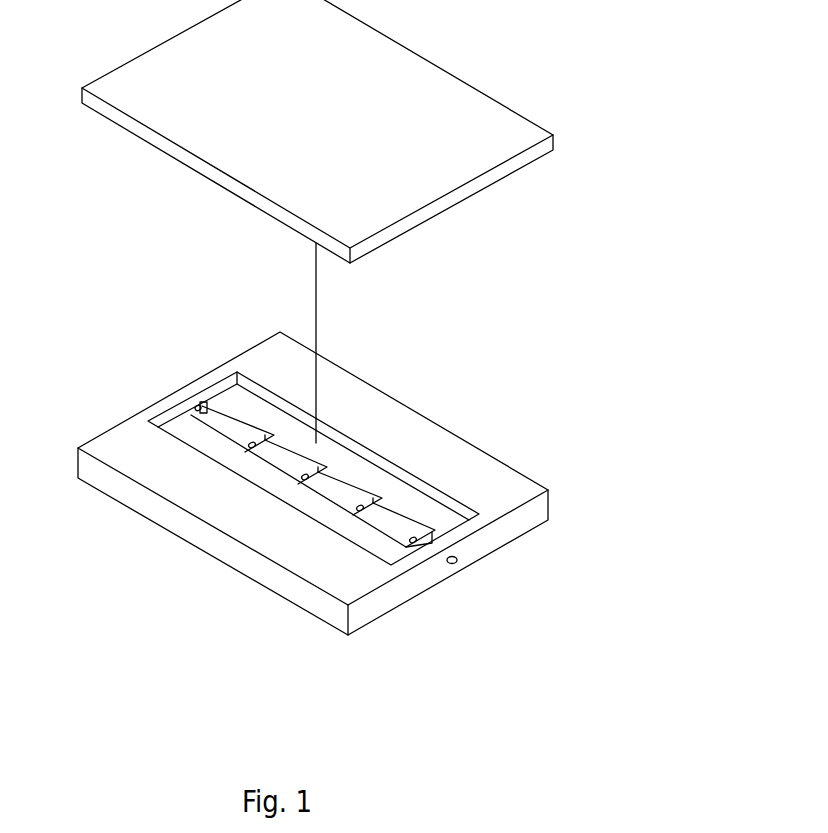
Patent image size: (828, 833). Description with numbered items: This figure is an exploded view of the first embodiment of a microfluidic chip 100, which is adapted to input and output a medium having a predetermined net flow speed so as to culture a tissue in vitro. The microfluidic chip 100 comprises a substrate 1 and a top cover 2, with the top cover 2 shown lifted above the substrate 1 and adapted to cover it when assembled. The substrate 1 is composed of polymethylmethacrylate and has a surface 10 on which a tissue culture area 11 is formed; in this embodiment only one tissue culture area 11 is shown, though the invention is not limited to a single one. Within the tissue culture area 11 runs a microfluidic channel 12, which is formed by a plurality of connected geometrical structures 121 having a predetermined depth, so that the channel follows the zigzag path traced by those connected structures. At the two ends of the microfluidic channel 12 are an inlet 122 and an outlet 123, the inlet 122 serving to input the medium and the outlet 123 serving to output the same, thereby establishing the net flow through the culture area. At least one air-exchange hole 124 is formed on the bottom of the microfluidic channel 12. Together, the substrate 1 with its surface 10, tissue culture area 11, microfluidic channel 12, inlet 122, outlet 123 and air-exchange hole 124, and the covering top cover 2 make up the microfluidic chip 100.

The microfluidic chip 100 is at (371, 317).
The substrate 1 is at (321, 457).
The surface 10 is at (125, 437).
The tissue culture area 11 is at (352, 438).
The microfluidic channel 12 is at (260, 436).
The geometrical structures 121 is at (233, 418).
The inlet 122 is at (460, 560).
The outlet 123 is at (196, 408).
The air-exchange hole 124 is at (274, 467).
The top cover 2 is at (553, 142).